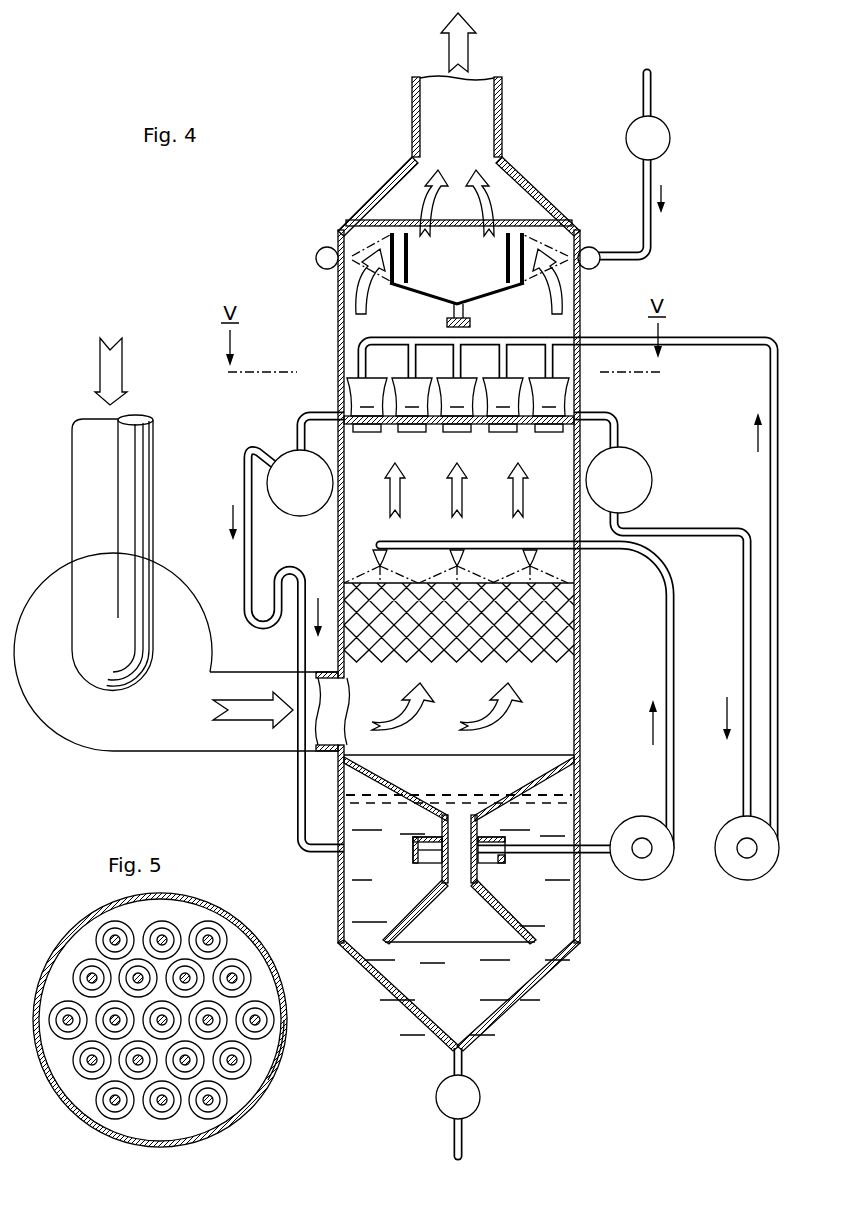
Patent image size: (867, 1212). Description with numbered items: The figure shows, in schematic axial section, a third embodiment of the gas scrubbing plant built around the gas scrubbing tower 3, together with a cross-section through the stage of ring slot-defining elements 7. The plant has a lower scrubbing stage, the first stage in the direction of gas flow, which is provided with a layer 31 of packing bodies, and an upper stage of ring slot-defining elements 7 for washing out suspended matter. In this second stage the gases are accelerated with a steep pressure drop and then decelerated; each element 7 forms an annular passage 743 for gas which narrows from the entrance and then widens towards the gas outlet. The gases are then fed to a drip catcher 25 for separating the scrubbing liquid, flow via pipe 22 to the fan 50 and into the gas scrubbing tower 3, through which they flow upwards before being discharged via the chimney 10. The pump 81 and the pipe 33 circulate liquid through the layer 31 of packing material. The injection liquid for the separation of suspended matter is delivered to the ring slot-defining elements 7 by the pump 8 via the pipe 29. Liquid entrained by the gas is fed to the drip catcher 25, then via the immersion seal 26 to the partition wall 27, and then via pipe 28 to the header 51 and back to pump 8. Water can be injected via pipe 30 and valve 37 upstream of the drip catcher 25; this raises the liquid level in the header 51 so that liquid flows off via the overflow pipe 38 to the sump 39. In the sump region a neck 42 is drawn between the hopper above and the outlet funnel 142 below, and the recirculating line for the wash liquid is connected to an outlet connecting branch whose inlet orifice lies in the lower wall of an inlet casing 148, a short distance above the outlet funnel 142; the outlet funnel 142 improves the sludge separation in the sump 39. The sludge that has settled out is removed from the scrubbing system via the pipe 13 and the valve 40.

In FIG. 4, the gas scrubbing tower 3 is at (570, 954).
In FIG. 5, the gas scrubbing tower 3 is at (77, 919).
In FIG. 4, the ring slot-defining element 7 is at (458, 397).
In FIG. 5, the ring slot-defining element 7 is at (226, 1099).
In FIG. 4, the pump 8 is at (736, 876).
In FIG. 4, the chimney 10 is at (503, 90).
In FIG. 4, the pipe 13 is at (464, 1063).
In FIG. 4, the pipe 22 is at (72, 446).
In FIG. 4, the drip catcher 25 is at (498, 264).
In FIG. 4, the immersion seal 26 is at (471, 324).
In FIG. 4, the partition wall 27 is at (437, 434).
In FIG. 5, the partition wall 27 is at (197, 1122).
In FIG. 4, the pipe 28 is at (298, 413).
In FIG. 4, the pipe 29 is at (771, 507).
In FIG. 4, the pipe 30 is at (651, 88).
In FIG. 4, the layer of packing bodies 31 is at (443, 650).
In FIG. 4, the pipe 33 is at (651, 582).
In FIG. 4, the valve 37 is at (628, 141).
In FIG. 4, the overflow pipe 38 is at (246, 480).
In FIG. 4, the sump 39 is at (350, 907).
In FIG. 4, the valve 40 is at (437, 1103).
In FIG. 4, the neck tube 42 is at (481, 866).
In FIG. 4, the fan 50 is at (56, 724).
In FIG. 4, the header 51 is at (298, 505).
In FIG. 4, the pump 81 is at (647, 877).
In FIG. 4, the outlet funnel 142 is at (518, 925).
In FIG. 4, the inlet casing 148 is at (412, 851).
In FIG. 5, the annular passage 743 is at (272, 1022).